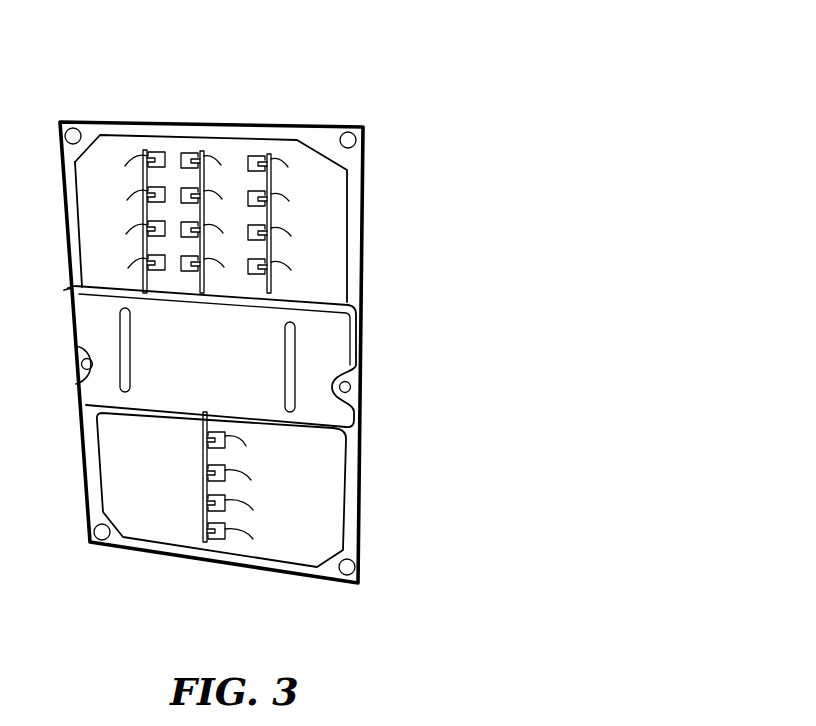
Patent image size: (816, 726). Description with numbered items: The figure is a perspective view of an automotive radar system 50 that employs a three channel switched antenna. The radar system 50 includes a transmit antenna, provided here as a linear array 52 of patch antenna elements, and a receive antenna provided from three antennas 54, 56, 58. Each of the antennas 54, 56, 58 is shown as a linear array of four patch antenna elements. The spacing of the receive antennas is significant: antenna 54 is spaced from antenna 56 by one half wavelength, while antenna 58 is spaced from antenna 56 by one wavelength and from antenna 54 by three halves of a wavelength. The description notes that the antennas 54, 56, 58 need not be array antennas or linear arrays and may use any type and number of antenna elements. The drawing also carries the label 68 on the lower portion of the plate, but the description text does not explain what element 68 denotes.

The automotive radar system 50 is at (275, 342).
The linear array of patch antenna elements 52 is at (229, 585).
The antenna 54 is at (139, 103).
The antenna 56 is at (200, 103).
The antenna 58 is at (268, 103).
The lower contact section 68 is at (330, 473).